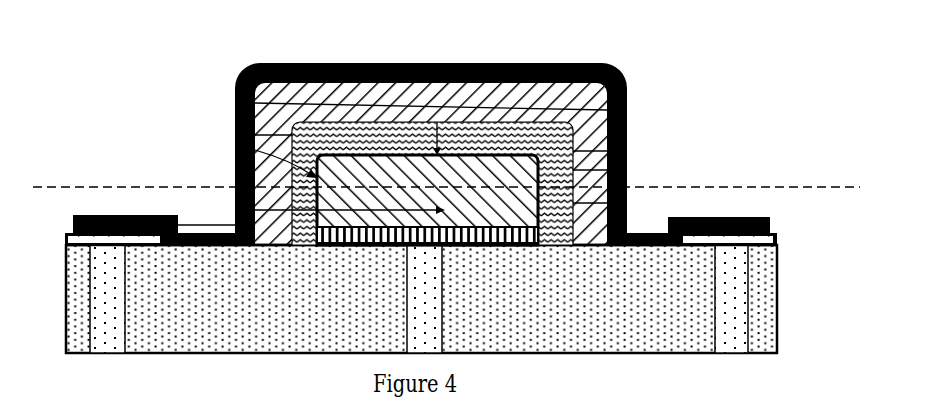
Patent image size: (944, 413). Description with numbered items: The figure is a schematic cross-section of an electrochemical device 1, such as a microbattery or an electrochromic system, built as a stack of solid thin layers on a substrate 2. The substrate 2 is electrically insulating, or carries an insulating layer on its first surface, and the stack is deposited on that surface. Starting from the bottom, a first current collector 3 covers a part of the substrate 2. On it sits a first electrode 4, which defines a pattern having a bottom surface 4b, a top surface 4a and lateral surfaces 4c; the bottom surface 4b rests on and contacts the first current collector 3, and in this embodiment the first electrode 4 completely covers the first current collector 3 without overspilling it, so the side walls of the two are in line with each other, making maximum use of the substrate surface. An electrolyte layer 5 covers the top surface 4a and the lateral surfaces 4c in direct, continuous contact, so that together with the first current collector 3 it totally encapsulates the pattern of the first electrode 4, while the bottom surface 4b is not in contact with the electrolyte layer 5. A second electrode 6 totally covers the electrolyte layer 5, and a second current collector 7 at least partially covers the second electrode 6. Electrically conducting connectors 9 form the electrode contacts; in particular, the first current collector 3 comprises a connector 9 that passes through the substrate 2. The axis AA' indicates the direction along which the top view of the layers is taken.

The electrochemical device 1 is at (456, 178).
The substrate 2 is at (675, 326).
The first current collector 3 is at (627, 203).
The first electrode 4 is at (627, 170).
The top surface 4a is at (235, 103).
The bottom surface 4b is at (235, 200).
The lateral surfaces 4c is at (235, 135).
The electrolyte layer 5 is at (627, 150).
The second electrode 6 is at (627, 110).
The second current collector 7 is at (627, 84).
The electrically conducting connector 9 is at (727, 286).